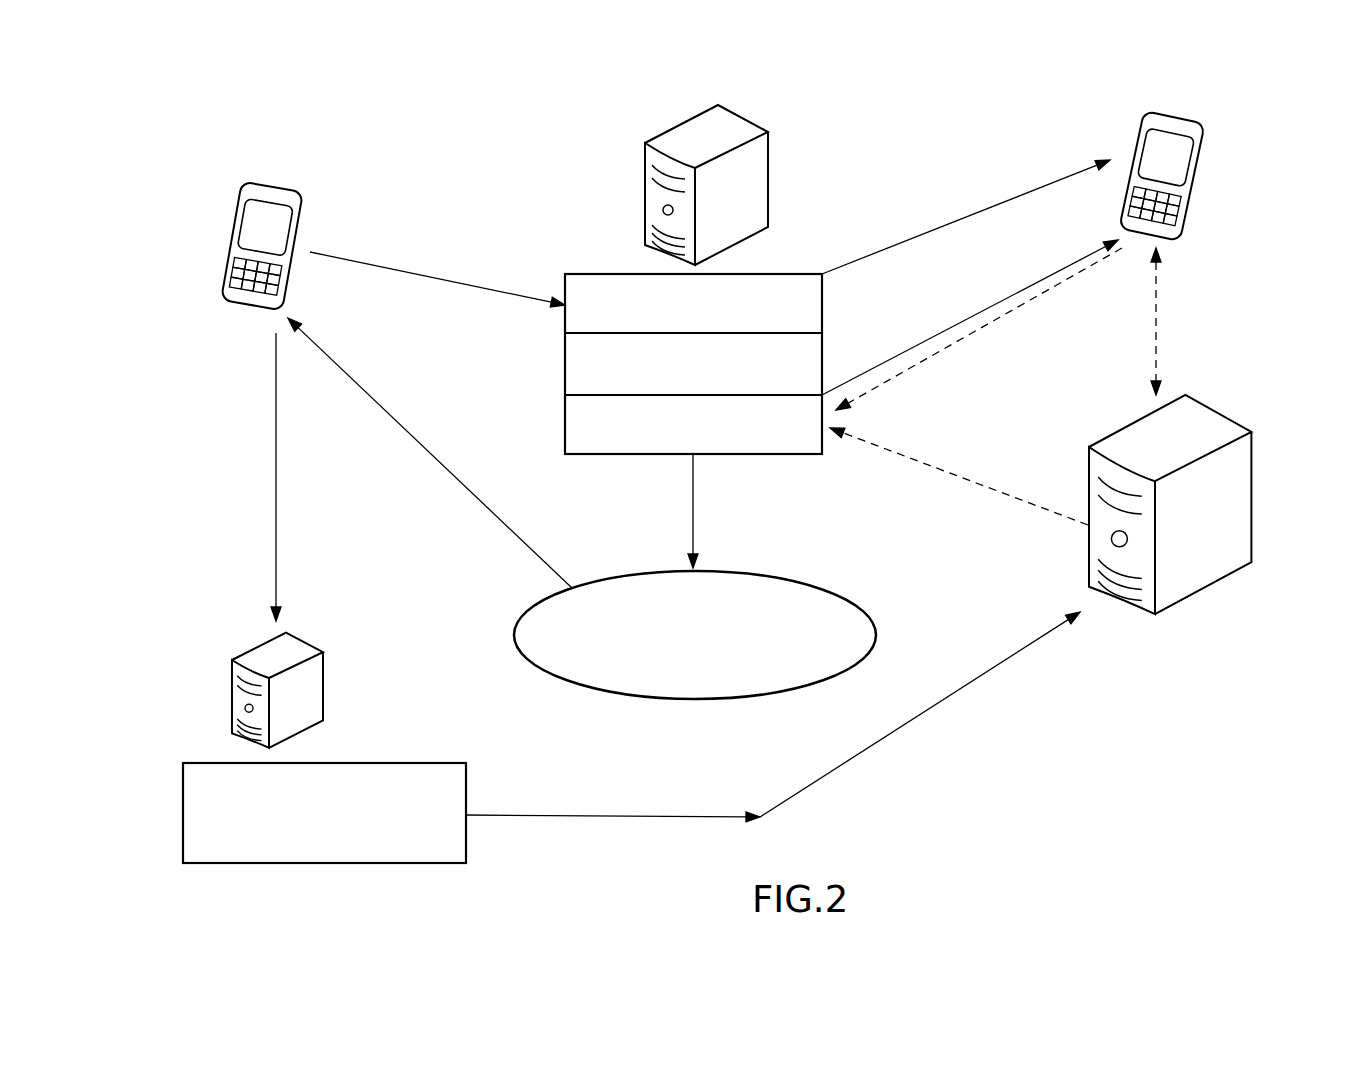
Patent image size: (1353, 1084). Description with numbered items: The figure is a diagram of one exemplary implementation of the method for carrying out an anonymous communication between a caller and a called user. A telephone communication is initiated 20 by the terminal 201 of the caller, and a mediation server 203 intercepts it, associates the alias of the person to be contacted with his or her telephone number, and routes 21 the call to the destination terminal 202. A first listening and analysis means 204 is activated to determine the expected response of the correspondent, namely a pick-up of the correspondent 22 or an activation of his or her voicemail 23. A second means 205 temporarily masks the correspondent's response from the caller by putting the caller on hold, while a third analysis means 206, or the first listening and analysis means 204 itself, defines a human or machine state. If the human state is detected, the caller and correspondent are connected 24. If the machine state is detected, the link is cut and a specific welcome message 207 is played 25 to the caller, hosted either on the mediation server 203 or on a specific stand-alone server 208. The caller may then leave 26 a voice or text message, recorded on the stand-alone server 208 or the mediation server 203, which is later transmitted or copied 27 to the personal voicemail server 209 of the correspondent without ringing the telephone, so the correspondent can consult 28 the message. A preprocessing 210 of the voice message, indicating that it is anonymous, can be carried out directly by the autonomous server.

The telephone communication initiation 20 is at (412, 270).
The routing of the call 21 is at (990, 207).
The pick-up of the correspondent 22 is at (977, 333).
The activation of voicemail 23 is at (955, 470).
The connection of caller and correspondent 24 is at (995, 303).
The playing of the specific welcome message 25 is at (473, 500).
The leaving of a message 26 is at (276, 500).
The transmission of the message 27 is at (863, 750).
The consultation of the message 28 is at (1156, 330).
The terminal of the caller 201 is at (288, 183).
The destination terminal 202 is at (1187, 113).
The mediation server 203 is at (768, 177).
The first listening and analysis means 204 is at (822, 303).
The second means 205 is at (592, 360).
The third analysis means 206 is at (592, 423).
The specific welcome message 207 is at (800, 603).
The specific stand-alone server 208 is at (320, 678).
The personal voicemail server 209 is at (1252, 482).
The preprocessing of the voice message 210 is at (348, 848).